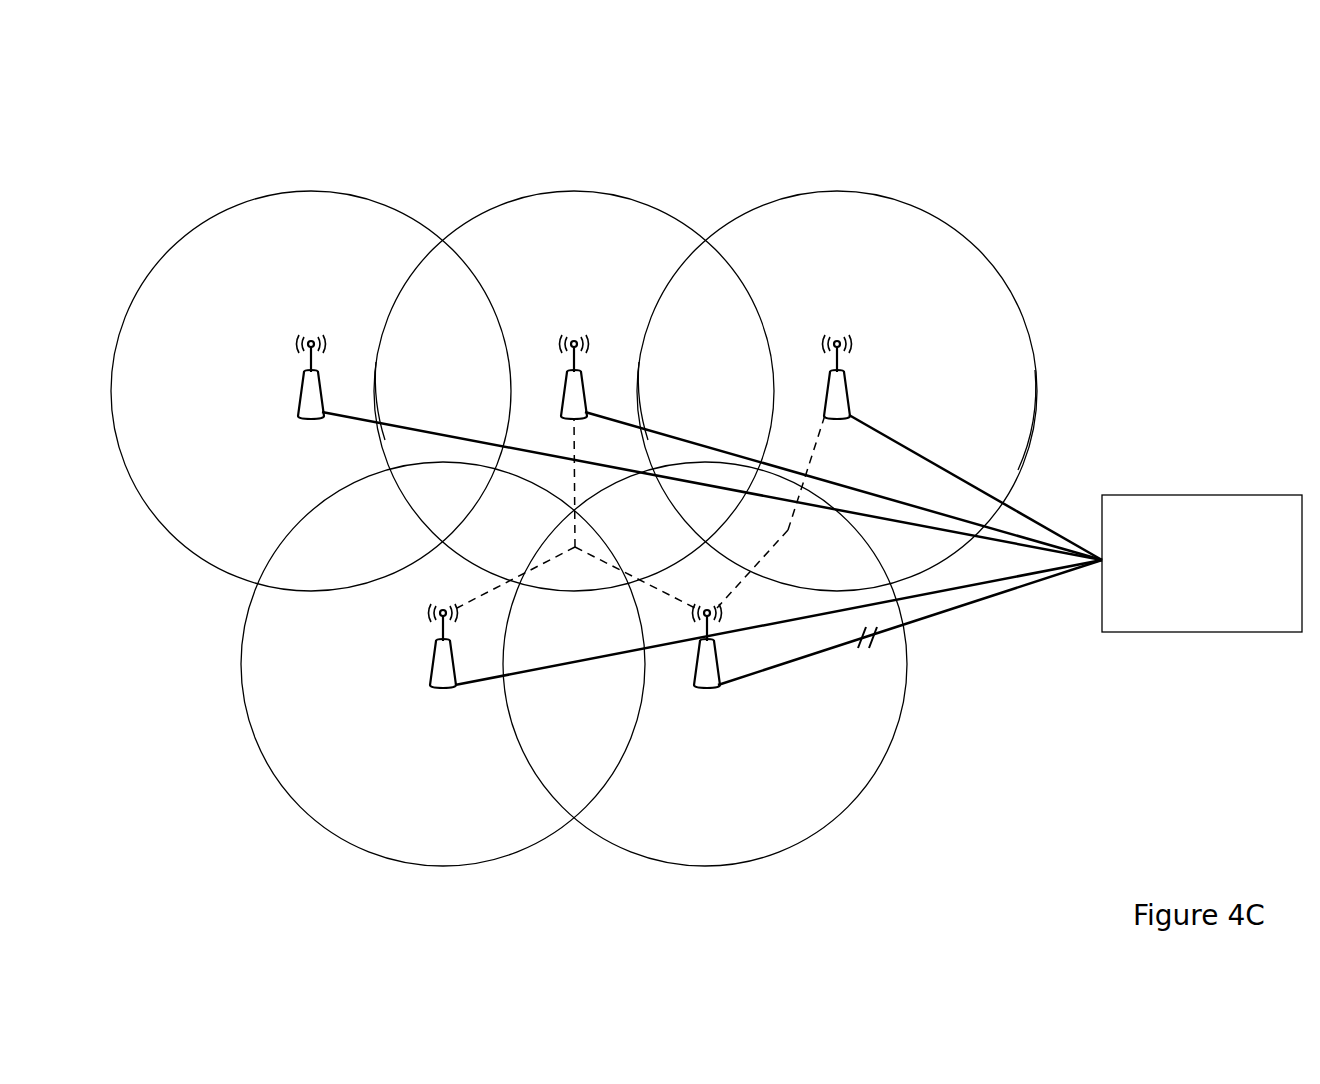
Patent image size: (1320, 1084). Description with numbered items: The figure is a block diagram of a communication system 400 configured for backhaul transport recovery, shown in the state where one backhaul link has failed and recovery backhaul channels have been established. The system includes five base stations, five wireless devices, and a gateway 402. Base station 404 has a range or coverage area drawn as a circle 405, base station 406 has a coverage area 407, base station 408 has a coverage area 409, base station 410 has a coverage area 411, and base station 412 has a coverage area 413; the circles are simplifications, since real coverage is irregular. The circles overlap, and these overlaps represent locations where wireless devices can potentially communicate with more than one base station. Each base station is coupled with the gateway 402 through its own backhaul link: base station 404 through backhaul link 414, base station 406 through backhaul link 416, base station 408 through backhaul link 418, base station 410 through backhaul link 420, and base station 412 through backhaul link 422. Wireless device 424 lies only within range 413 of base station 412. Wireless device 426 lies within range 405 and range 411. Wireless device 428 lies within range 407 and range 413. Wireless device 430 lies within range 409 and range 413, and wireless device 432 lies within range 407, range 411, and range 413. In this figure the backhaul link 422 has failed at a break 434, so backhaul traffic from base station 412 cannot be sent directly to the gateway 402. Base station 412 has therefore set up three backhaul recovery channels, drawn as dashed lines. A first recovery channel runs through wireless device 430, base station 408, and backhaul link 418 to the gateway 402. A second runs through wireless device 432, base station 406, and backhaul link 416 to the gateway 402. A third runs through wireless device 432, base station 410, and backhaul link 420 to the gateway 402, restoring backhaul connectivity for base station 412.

The communication system 400 is at (993, 142).
The gateway 402 is at (1184, 601).
The base station 404 is at (312, 332).
The range or coverage area 405 is at (311, 192).
The base station 406 is at (575, 332).
The range or coverage area 407 is at (574, 192).
The base station 408 is at (838, 332).
The range or coverage area 409 is at (837, 192).
The base station 410 is at (443, 698).
The range or coverage area 411 is at (542, 843).
The base station 412 is at (707, 698).
The range or coverage area 413 is at (807, 843).
The backhaul link 414 is at (393, 418).
The backhaul link 416 is at (655, 418).
The backhaul link 418 is at (895, 435).
The backhaul link 420 is at (963, 592).
The backhaul link 422 is at (912, 623).
The wireless device 424 is at (658, 809).
The wireless device 426 is at (345, 546).
The wireless device 428 is at (640, 530).
The wireless device 430 is at (788, 545).
The wireless device 432 is at (575, 562).
The break 434 is at (878, 652).